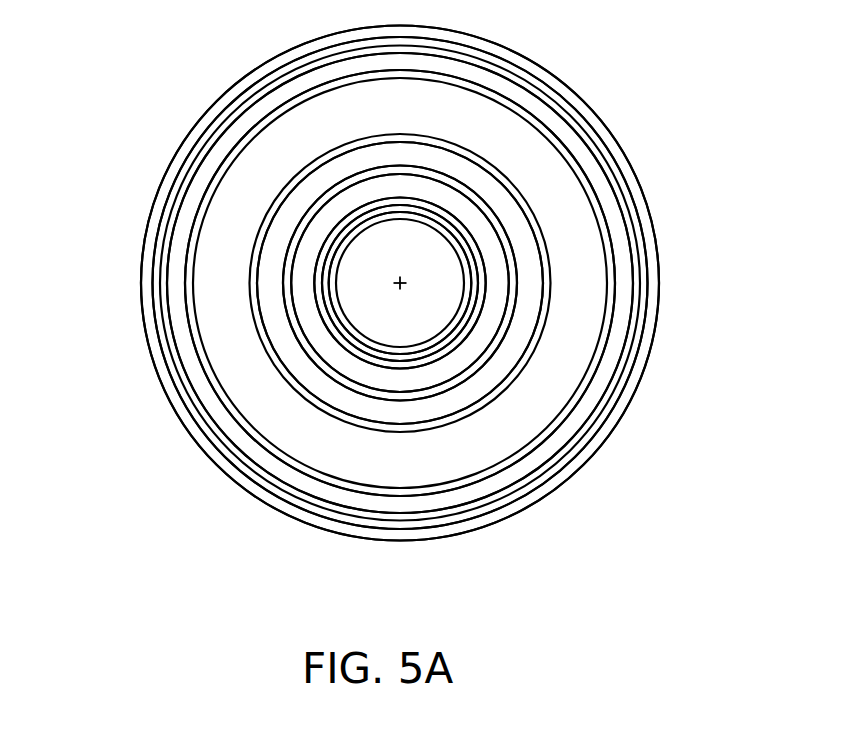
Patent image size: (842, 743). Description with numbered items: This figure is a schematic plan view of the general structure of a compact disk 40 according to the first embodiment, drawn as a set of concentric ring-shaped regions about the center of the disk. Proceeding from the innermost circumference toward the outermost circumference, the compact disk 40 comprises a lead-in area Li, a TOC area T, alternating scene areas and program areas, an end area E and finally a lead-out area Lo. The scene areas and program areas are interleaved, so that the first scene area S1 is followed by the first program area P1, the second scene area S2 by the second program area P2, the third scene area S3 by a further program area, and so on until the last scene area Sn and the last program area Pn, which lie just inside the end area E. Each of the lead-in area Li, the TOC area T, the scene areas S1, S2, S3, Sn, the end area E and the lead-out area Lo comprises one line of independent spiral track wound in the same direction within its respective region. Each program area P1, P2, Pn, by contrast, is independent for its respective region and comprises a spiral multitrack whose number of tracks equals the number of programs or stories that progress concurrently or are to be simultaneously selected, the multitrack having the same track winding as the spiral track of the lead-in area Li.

The compact disk 40 is at (97, 74).
The lead-in area Li is at (474, 210).
The TOC area T is at (492, 229).
The first scene area S1 is at (507, 252).
The first program area P1 is at (512, 279).
The second scene area S2 is at (514, 283).
The second program area P2 is at (501, 283).
The third scene area S3 is at (497, 283).
The n-th scene area Sn is at (456, 283).
The n-th program area Pn is at (425, 283).
The end area E is at (400, 284).
The lead-out area Lo is at (400, 303).